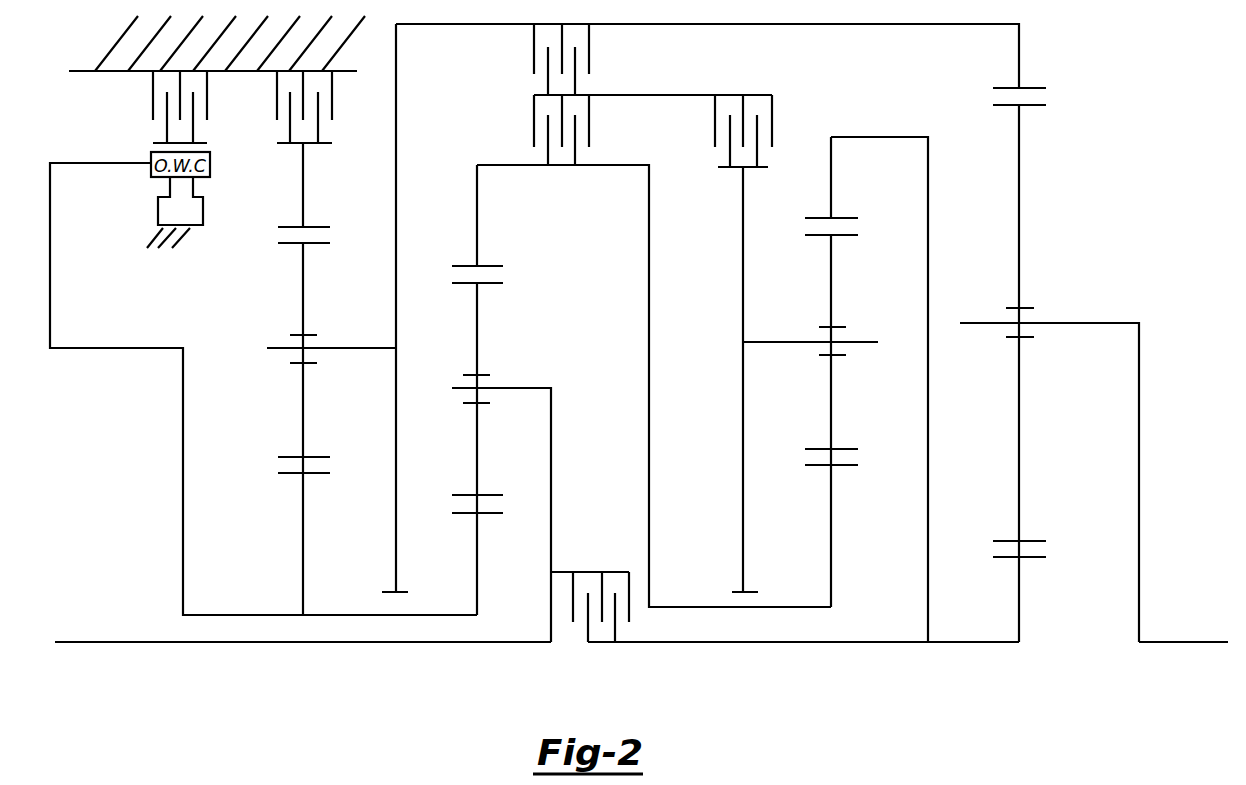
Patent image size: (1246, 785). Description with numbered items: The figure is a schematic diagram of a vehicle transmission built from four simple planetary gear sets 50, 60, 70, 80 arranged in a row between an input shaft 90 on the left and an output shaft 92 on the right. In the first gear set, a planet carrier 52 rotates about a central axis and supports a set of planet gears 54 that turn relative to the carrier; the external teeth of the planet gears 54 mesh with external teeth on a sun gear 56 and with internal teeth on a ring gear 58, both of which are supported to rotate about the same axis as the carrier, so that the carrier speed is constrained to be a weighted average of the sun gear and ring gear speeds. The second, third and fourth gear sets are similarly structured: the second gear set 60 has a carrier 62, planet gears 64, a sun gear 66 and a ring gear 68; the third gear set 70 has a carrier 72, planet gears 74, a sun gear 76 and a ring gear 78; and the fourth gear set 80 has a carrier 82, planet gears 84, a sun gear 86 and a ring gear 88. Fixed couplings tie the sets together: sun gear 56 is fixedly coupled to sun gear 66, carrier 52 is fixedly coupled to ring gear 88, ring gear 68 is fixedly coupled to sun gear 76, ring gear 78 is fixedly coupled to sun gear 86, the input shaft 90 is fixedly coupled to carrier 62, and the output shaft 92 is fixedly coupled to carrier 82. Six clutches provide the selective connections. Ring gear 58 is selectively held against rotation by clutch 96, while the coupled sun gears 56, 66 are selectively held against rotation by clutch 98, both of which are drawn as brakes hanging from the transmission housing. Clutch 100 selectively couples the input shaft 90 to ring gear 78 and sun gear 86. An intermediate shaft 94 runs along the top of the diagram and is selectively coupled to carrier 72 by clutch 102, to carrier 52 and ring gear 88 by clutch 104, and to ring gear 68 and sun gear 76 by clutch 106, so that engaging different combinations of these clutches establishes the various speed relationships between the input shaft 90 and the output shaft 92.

The first simple planetary gear set 50 is at (290, 692).
The planet carrier 52 is at (396, 177).
The planet gears 54 is at (303, 290).
The sun gear 56 is at (303, 545).
The ring gear 58 is at (303, 183).
The second simple planetary gear set 60 is at (464, 692).
The carrier 62 is at (551, 462).
The planet gears 64 is at (477, 329).
The sun gear 66 is at (477, 565).
The ring gear 68 is at (477, 215).
The third simple planetary gear set 70 is at (820, 692).
The carrier 72 is at (743, 320).
The planet gears 74 is at (831, 282).
The sun gear 76 is at (831, 538).
The ring gear 78 is at (831, 180).
The fourth simple planetary gear set 80 is at (1008, 692).
The carrier 82 is at (1092, 323).
The planet gears 84 is at (1019, 208).
The sun gear 86 is at (1019, 601).
The ring gear 88 is at (1019, 55).
The input shaft 90 is at (116, 642).
The output shaft 92 is at (1183, 642).
The intermediate shaft 94 is at (653, 95).
The clutch 96 is at (277, 93).
The clutch 98 is at (153, 93).
The clutch 100 is at (583, 572).
The clutch 102 is at (725, 95).
The clutch 104 is at (534, 47).
The clutch 106 is at (534, 121).